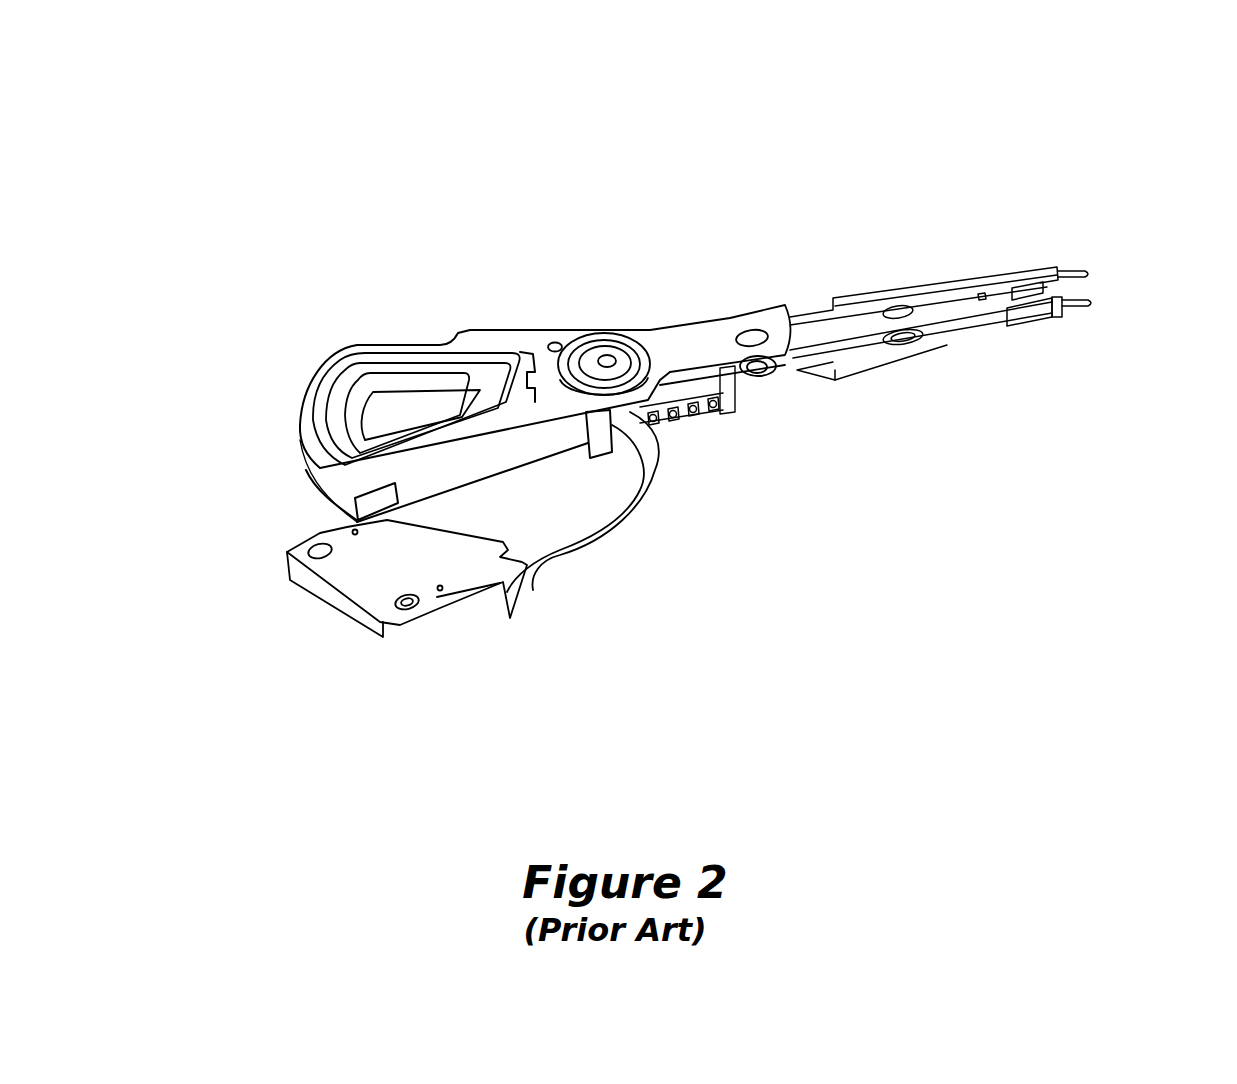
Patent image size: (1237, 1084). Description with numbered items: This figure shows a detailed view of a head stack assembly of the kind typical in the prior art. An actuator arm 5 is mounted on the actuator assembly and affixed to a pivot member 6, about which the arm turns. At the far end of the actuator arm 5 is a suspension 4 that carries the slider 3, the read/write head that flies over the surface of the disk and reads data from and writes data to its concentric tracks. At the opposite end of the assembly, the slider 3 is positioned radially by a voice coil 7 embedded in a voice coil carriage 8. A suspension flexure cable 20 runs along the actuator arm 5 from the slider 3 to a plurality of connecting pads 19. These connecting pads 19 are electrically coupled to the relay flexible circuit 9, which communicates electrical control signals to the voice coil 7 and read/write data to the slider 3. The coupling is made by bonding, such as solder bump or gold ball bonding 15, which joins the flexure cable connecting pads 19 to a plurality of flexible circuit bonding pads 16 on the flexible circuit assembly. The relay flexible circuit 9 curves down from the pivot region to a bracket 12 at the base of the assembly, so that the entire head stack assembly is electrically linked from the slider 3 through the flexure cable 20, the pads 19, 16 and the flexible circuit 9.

The slider 3 is at (1033, 312).
The suspension load beam 4 is at (856, 308).
The actuator arm 5 is at (697, 322).
The pivot member 6 is at (586, 335).
The voice coil 7 is at (346, 368).
The voice coil carriage 8 is at (305, 433).
The relay flexible circuit 9 is at (604, 530).
The mounting bracket 12 is at (362, 558).
The solder bump or gold ball bonding 15 is at (715, 407).
The flexible circuit bonding pads 16 is at (713, 404).
The connecting pads 19 is at (715, 407).
The suspension flexure cable 20 is at (718, 376).